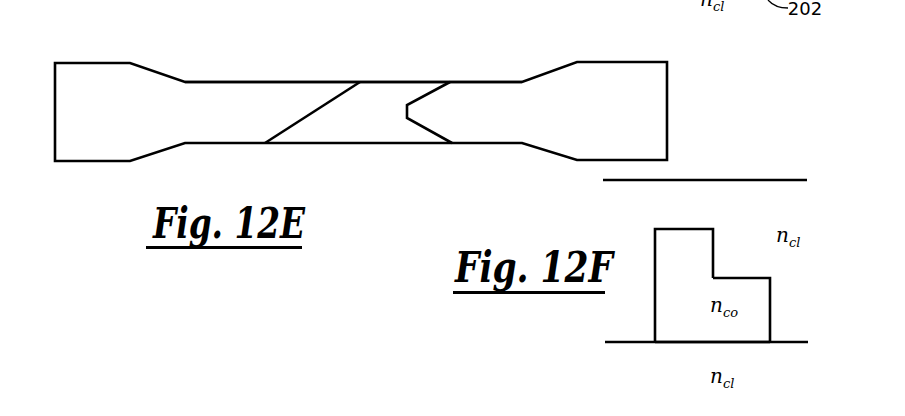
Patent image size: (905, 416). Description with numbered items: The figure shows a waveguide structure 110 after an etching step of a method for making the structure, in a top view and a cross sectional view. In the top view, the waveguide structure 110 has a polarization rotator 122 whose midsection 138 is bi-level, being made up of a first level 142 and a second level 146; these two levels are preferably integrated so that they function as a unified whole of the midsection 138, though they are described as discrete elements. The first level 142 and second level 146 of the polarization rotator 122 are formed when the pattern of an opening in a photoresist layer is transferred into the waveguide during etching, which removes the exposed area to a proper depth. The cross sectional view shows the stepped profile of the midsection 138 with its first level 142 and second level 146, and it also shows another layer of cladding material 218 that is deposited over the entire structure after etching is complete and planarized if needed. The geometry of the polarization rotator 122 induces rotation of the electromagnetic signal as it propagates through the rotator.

In FIG. 12E, the waveguide structure 110 is at (508, 50).
In FIG. 12E, the polarization rotator 122 is at (243, 50).
In FIG. 12E, the first level 142 is at (298, 92).
In FIG. 12F, the first level 142 is at (713, 251).
In FIG. 12E, the midsection 138 is at (330, 128).
In FIG. 12F, the midsection 138 is at (773, 292).
In FIG. 12E, the second level 146 is at (387, 95).
In FIG. 12F, the second level 146 is at (770, 327).
In FIG. 12F, the cladding material 218 is at (702, 198).